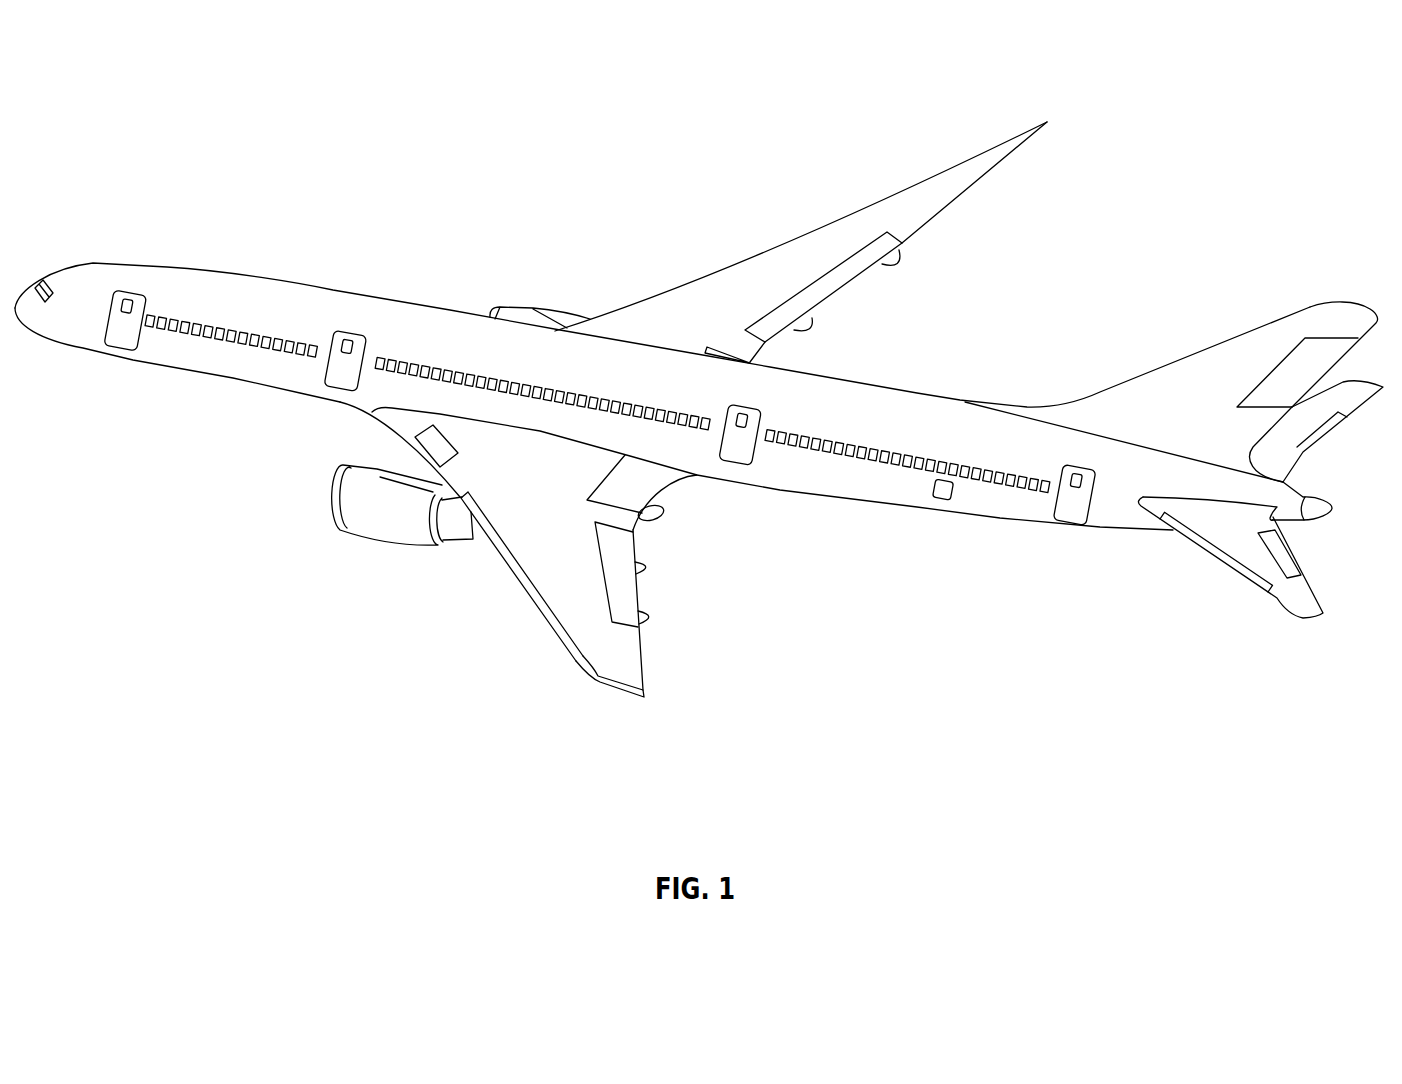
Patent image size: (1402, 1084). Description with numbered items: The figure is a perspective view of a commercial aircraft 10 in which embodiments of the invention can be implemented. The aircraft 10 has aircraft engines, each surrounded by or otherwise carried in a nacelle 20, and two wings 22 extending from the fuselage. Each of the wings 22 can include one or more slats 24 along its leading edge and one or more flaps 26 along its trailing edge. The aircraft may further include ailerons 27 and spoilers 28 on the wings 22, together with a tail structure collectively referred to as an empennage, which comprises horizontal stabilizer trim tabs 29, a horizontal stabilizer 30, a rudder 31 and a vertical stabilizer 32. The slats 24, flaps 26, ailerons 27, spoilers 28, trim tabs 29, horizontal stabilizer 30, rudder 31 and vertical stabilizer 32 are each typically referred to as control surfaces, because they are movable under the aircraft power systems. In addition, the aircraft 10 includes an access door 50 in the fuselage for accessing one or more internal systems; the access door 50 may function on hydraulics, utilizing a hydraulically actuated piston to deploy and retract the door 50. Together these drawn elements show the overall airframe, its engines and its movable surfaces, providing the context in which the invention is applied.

The commercial aircraft 10 is at (1210, 128).
The nacelle 20 is at (523, 317).
The wings 22 is at (697, 428).
The slats 24 is at (550, 630).
The flaps 26 is at (853, 273).
The ailerons 27 is at (995, 177).
The spoilers 28 is at (891, 195).
The horizontal stabilizer trim tabs 29 is at (1211, 574).
The horizontal stabilizer 30 is at (1263, 499).
The rudder 31 is at (1289, 362).
The vertical stabilizer 32 is at (1330, 446).
The access door 50 is at (945, 491).